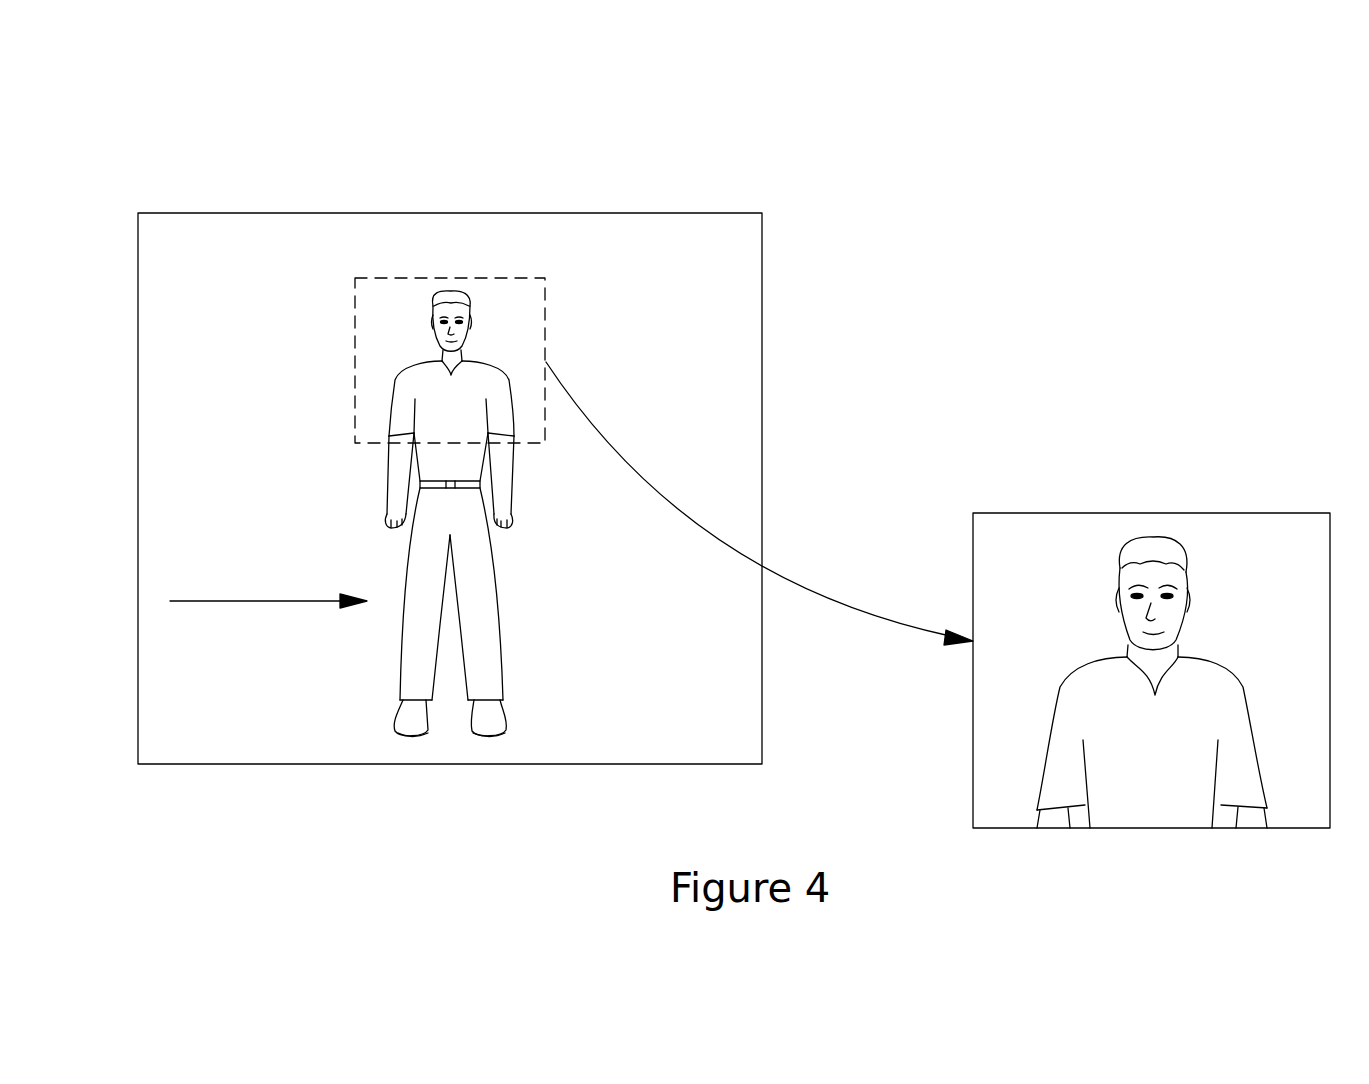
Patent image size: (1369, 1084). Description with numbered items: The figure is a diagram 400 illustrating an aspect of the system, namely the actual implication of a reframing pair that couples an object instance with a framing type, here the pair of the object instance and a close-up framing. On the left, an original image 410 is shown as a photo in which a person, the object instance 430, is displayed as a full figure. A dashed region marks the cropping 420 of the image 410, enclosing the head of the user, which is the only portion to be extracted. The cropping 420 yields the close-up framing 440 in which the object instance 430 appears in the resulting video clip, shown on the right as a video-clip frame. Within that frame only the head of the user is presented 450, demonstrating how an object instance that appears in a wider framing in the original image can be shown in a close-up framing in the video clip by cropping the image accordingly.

The diagram 400 is at (195, 113).
The image 410 is at (213, 213).
The cropping 420 is at (438, 278).
The object instance (person) in photo 430 is at (470, 306).
The close-up framing 440 is at (1047, 513).
The presented head 450 is at (1186, 576).